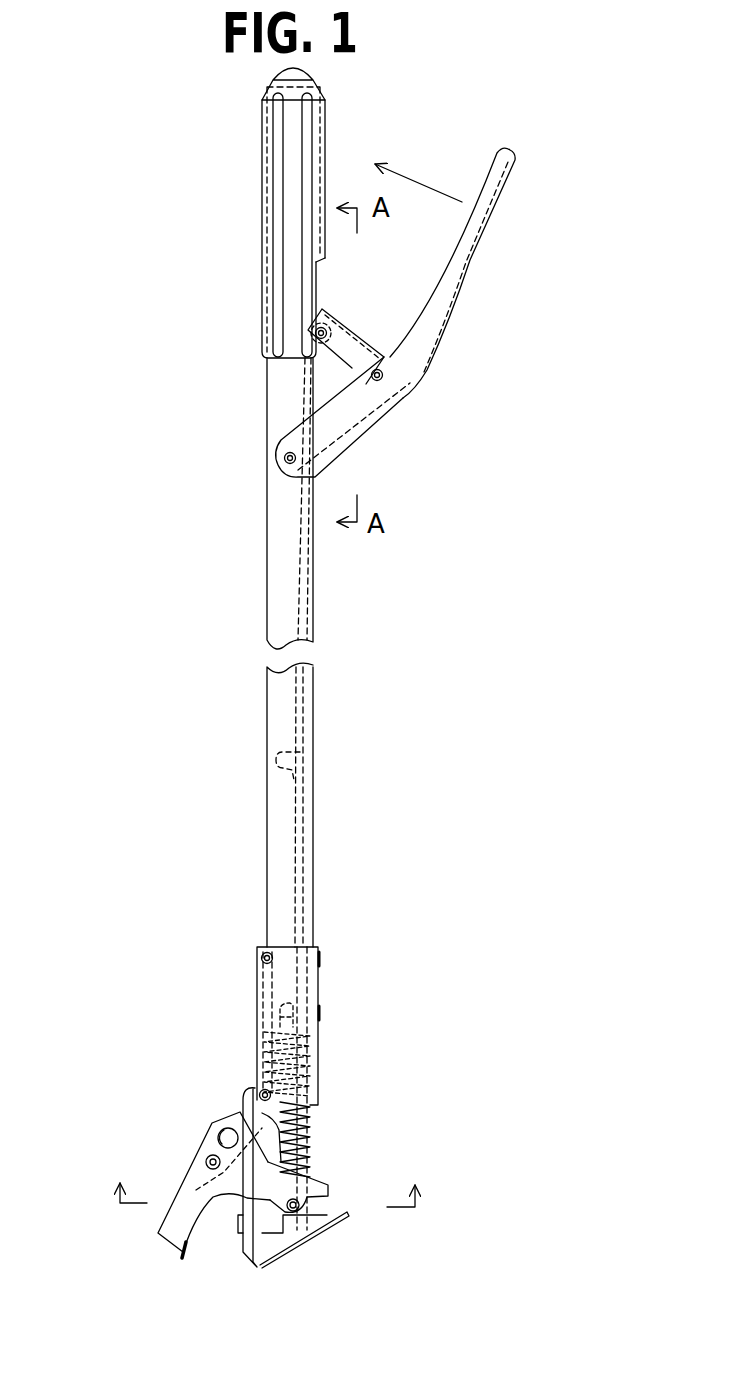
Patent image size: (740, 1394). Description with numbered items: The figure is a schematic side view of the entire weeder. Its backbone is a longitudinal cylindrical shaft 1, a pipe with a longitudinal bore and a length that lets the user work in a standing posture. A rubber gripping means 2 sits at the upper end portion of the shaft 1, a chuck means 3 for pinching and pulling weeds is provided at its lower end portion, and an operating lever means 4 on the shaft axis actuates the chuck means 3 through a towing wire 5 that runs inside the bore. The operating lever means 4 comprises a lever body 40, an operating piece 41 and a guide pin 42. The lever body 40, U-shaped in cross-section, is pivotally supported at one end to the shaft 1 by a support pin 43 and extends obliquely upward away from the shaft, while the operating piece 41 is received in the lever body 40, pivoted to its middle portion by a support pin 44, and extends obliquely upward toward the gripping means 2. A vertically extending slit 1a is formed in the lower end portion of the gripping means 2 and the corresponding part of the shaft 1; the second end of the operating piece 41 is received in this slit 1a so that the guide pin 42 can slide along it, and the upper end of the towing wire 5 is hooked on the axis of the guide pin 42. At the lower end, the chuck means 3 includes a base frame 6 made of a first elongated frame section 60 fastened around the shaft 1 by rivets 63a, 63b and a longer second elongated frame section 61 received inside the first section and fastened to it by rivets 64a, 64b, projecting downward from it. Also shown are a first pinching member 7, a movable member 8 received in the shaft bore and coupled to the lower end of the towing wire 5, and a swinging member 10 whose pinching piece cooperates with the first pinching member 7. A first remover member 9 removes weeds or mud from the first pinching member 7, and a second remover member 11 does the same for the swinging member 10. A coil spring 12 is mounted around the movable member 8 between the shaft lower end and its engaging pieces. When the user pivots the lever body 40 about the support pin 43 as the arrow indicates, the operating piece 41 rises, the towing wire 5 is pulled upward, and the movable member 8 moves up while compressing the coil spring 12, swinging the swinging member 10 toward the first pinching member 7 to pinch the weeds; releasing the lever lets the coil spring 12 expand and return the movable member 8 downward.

The longitudinal cylindrical shaft 1 is at (240, 403).
The vertically extending slit 1a is at (315, 292).
The gripping means 2 is at (261, 180).
The chuck means 3 is at (53, 942).
The operating lever means 4 is at (434, 380).
The towing wire 5 is at (300, 752).
The base frame 6 is at (242, 971).
The first pinching member 7 is at (297, 1252).
The movable member 8 is at (342, 1192).
The first remover member 9 is at (232, 1104).
The swinging member 10 is at (150, 1260).
The second remover member 11 is at (195, 1254).
The coil spring 12 is at (310, 1133).
The lever body 40 is at (487, 227).
The operating piece 41 is at (350, 328).
The guide pin 42 is at (316, 332).
The support pin 43 is at (284, 458).
The support pin 44 is at (383, 380).
The first elongated frame section 60 is at (320, 987).
The second elongated frame section 61 is at (257, 993).
The rivet 63a is at (321, 958).
The rivet 63b is at (321, 1013).
The rivet 64a is at (263, 955).
The rivet 64b is at (258, 1088).